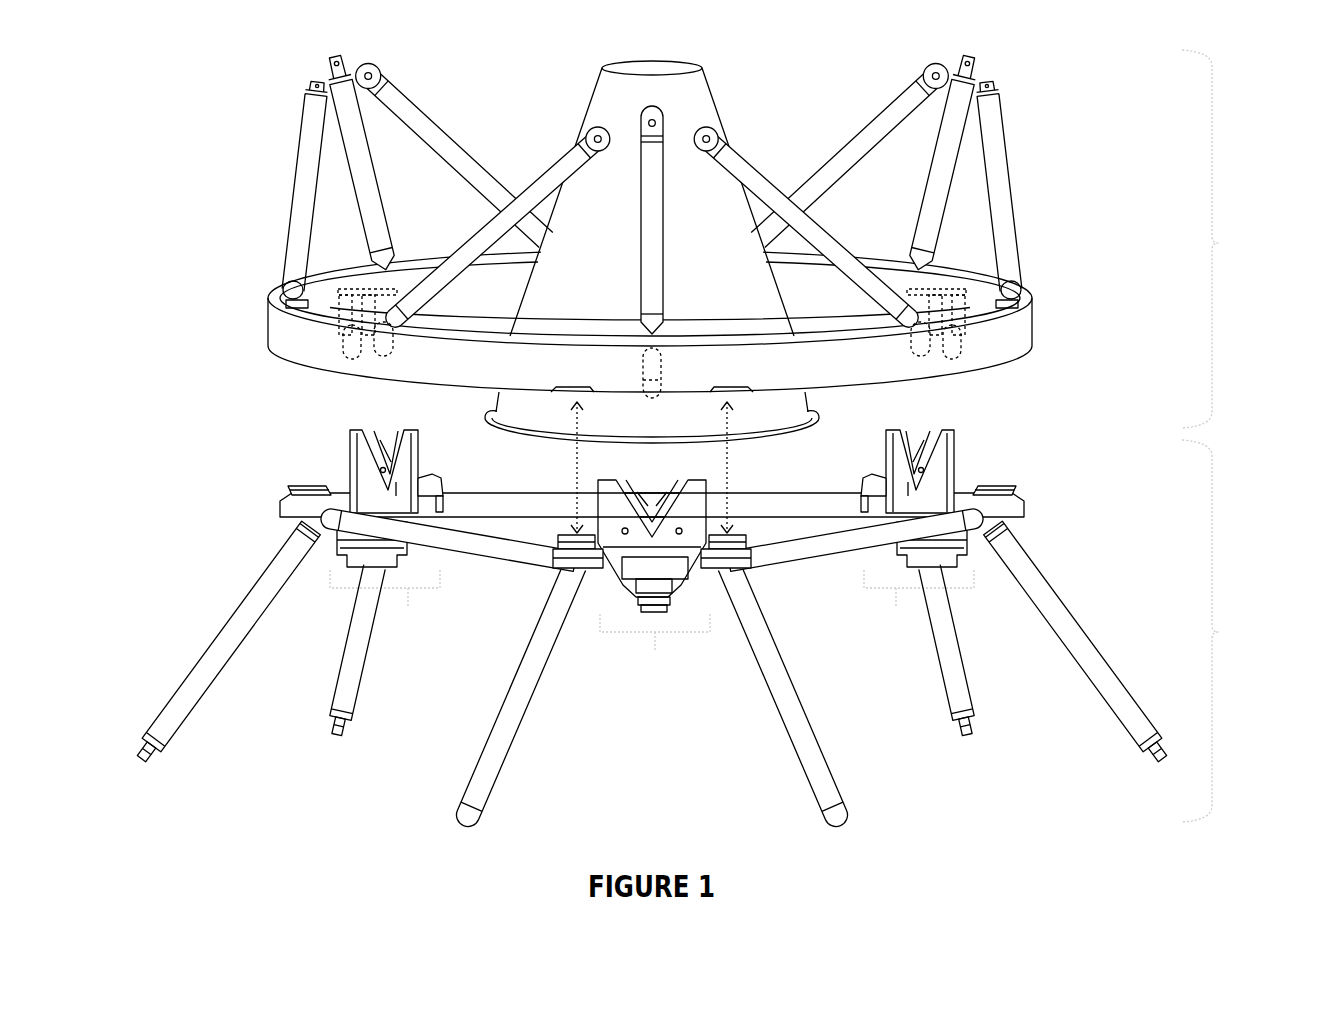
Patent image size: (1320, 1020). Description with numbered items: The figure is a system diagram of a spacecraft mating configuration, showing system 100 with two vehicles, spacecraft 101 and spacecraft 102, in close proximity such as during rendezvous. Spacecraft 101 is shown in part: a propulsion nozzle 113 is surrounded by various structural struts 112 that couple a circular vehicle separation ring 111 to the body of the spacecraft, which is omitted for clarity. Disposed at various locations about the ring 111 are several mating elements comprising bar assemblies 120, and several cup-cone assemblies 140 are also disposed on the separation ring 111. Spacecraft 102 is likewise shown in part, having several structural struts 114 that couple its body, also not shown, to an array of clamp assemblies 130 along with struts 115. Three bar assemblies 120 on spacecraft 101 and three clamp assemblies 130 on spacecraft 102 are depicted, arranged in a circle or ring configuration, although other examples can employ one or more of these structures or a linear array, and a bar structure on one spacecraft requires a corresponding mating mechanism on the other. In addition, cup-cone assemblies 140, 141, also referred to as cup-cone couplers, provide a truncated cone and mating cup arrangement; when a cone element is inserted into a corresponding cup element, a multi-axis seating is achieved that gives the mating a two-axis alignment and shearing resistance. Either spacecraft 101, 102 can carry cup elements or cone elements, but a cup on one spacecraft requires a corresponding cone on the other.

The system 100 is at (219, 106).
The spacecraft 101 is at (1218, 243).
The spacecraft 102 is at (1218, 632).
The vehicle separation ring 111 is at (271, 320).
The structural struts 112 is at (292, 232).
The propulsion nozzle 113 is at (573, 126).
The structural struts 114 is at (262, 573).
The struts 115 is at (521, 570).
The bar assemblies 120 is at (344, 344).
The clamp assemblies 130 is at (652, 555).
The cup-cone assemblies 140 is at (566, 396).
The cup-cone assemblies 141 is at (309, 483).